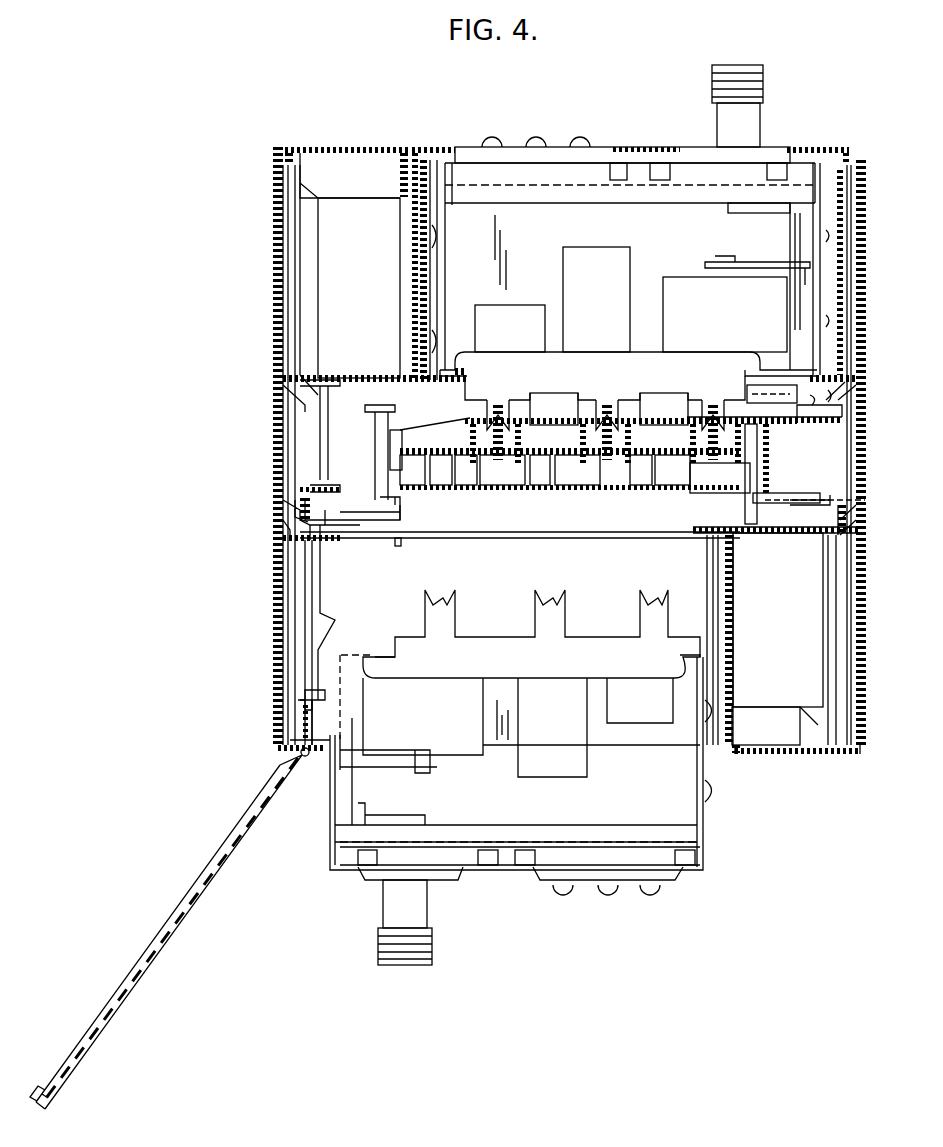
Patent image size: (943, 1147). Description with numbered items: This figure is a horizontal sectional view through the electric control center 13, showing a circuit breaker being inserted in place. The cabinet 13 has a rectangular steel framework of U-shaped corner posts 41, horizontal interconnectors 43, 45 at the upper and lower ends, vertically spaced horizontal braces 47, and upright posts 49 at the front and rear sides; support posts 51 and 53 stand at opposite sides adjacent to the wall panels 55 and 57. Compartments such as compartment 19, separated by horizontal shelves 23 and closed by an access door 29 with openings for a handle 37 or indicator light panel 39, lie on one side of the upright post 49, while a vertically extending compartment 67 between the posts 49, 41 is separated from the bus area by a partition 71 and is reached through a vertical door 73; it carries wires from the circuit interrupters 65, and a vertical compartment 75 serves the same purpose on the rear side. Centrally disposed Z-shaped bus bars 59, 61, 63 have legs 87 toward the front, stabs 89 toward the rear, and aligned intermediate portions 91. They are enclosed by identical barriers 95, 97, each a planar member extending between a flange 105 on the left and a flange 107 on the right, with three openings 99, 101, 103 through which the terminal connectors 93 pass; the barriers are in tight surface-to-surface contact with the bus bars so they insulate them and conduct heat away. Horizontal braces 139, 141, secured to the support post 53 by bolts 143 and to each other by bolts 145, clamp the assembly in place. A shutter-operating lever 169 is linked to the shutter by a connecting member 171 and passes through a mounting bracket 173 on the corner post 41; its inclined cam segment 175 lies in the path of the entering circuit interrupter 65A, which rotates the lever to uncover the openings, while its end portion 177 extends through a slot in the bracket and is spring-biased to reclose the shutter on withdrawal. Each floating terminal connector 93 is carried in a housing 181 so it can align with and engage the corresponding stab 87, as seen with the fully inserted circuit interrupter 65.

The electric control center 13 is at (214, 458).
The compartment 19 is at (300, 728).
The horizontal shelf 23 is at (715, 570).
The access door 29 is at (810, 150).
The handle 37 is at (751, 138).
The indicator light panel 39 is at (556, 150).
The U-shaped corner post 41 is at (300, 147).
The horizontal interconnector 43 is at (345, 175).
The horizontal interconnector 45 is at (295, 250).
The horizontal brace 47 is at (295, 570).
The upright post 49 is at (400, 168).
The support post 51 is at (290, 400).
The support post 53 is at (295, 520).
The wall panel 55 is at (285, 352).
The wall panel 57 is at (855, 282).
The vertical bus bar 59 is at (430, 448).
The vertical bus bar 61 is at (592, 465).
The vertical bus bar 63 is at (700, 492).
The circuit interrupter 65 is at (432, 283).
The circuit interrupter 65A is at (330, 830).
The vertical compartment 67 is at (789, 635).
The partition 71 is at (762, 537).
The vertical door 73 is at (838, 755).
The vertical compartment 75 is at (376, 317).
The leg 87 is at (432, 485).
The stab 89 is at (498, 430).
The intermediate portion 91 is at (555, 430).
The terminal connector 93 is at (535, 580).
The barrier 95 is at (405, 446).
The barrier 97 is at (500, 485).
The opening 99 is at (466, 485).
The opening 101 is at (570, 485).
The opening 103 is at (672, 485).
The flange 105 is at (410, 466).
The flange 107 is at (770, 455).
The horizontal brace 139 is at (742, 492).
The horizontal brace 141 is at (752, 412).
The bolt 143 is at (310, 485).
The bolt 145 is at (770, 475).
The cam or lever 169 is at (322, 530).
The connecting member 171 is at (400, 525).
The mounting bracket 173 is at (325, 690).
The cam segment 175 is at (330, 630).
The end portion 177 is at (318, 706).
The housing 181 is at (525, 610).